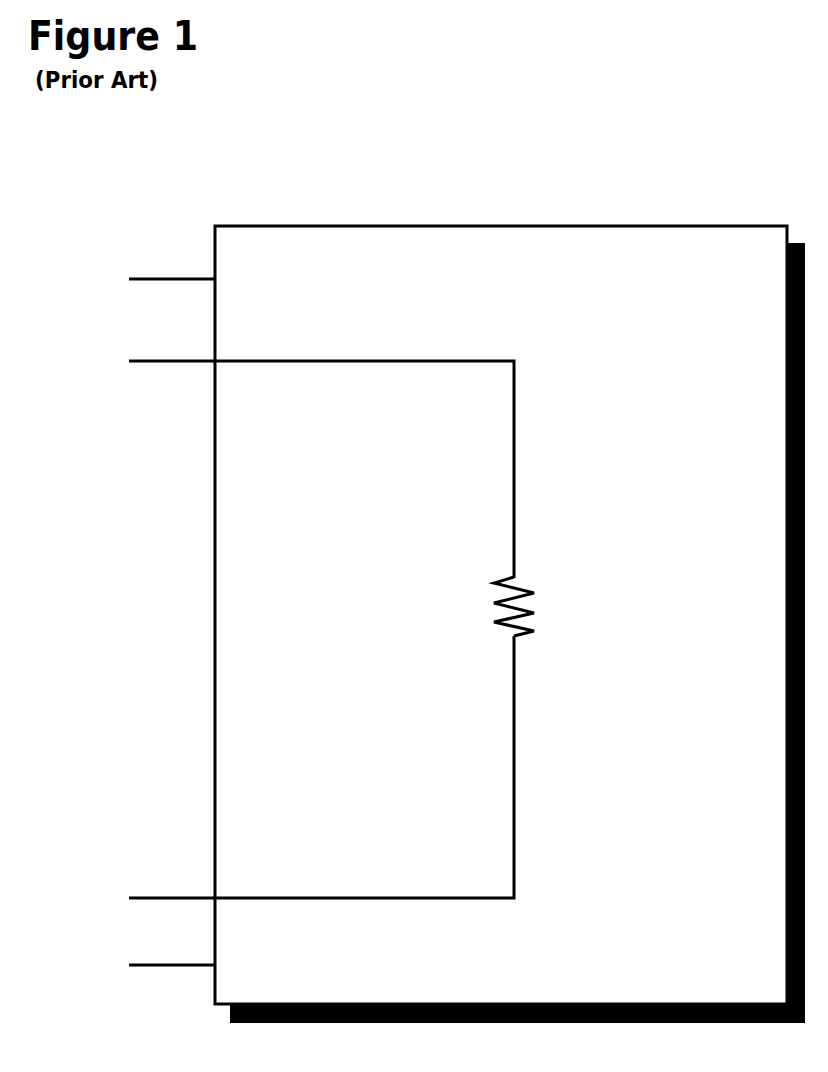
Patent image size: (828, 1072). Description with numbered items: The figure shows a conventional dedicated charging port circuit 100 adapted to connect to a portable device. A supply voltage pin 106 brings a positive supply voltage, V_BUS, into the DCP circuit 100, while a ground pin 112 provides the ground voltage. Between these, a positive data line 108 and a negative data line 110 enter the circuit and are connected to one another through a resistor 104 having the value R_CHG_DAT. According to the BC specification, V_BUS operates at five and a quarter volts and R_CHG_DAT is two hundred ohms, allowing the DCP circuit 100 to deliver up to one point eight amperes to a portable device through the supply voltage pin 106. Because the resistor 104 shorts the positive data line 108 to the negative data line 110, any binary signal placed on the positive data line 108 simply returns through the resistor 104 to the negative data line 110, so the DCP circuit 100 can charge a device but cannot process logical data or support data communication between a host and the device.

The dedicated charging port (DCP) circuit 100 is at (668, 105).
The resistor 104 is at (535, 593).
The supply voltage pin 106 is at (157, 278).
The positive data line 108 is at (150, 360).
The negative data line 110 is at (170, 897).
The ground pin 112 is at (184, 966).